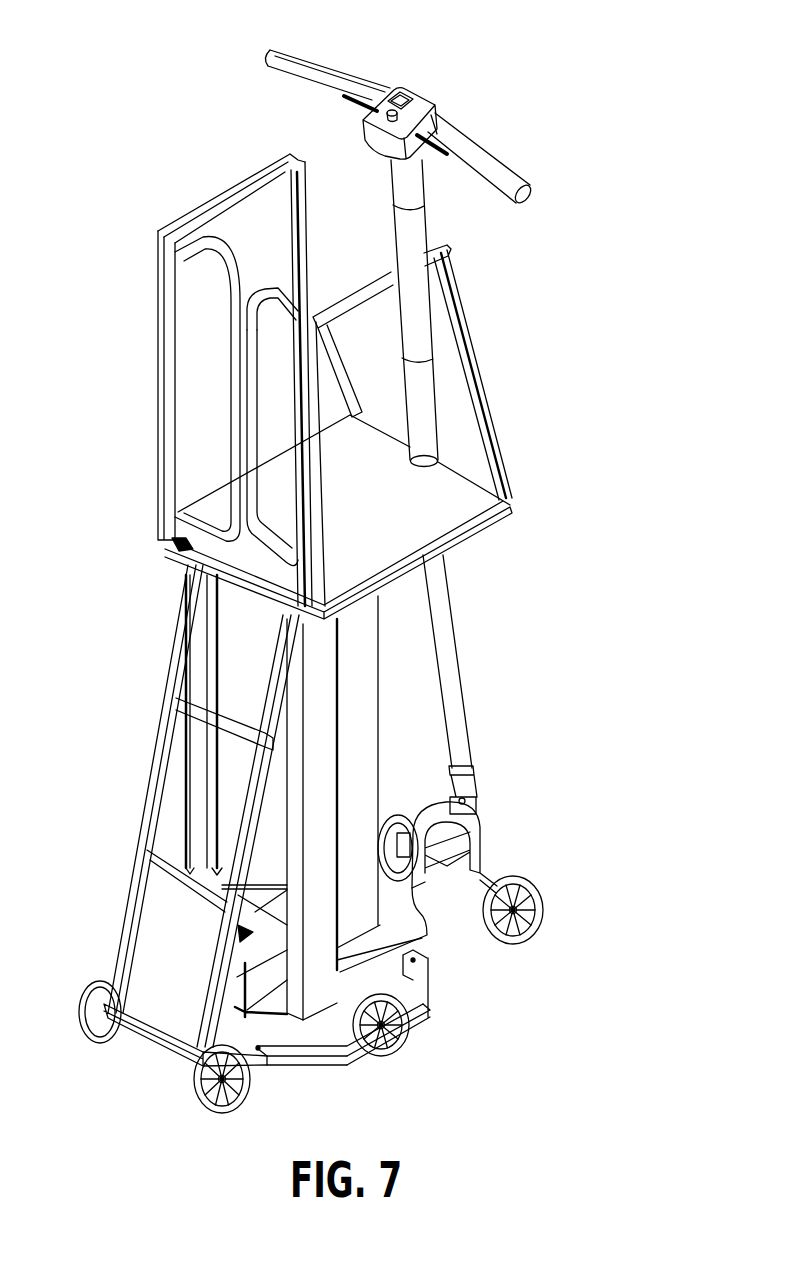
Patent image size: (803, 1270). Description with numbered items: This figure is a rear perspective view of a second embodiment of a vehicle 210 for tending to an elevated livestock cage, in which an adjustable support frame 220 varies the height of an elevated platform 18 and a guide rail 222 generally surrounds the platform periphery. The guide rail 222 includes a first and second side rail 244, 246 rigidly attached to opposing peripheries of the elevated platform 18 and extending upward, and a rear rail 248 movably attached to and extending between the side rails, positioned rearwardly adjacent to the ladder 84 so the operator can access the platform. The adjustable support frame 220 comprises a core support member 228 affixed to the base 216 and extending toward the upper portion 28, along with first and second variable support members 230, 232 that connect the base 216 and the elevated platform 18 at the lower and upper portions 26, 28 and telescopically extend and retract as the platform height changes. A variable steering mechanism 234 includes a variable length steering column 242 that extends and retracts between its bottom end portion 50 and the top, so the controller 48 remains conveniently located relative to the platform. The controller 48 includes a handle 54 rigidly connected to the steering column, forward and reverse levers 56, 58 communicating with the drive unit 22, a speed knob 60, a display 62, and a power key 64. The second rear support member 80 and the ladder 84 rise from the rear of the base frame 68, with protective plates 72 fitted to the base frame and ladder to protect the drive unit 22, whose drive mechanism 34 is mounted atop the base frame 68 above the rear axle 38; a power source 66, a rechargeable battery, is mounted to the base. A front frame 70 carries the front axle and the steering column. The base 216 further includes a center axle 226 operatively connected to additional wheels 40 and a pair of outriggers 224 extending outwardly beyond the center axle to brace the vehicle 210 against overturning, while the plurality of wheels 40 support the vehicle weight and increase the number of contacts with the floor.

The vehicle 210 is at (626, 138).
The controller 48 is at (445, 84).
The handle 54 is at (502, 150).
The forward lever 56 is at (450, 127).
The reverse lever 58 is at (357, 108).
The speed knob 60 is at (381, 146).
The display 62 is at (402, 95).
The power key 64 is at (389, 108).
The elevated platform 18 is at (387, 438).
The guide rail 222 is at (139, 220).
The first side rail 244 is at (250, 183).
The second side rail 246 is at (395, 267).
The rear rail 248 is at (268, 287).
The upper portion 28 is at (178, 561).
The variable steering mechanism 234 is at (493, 580).
The variable length steering column 242 is at (458, 632).
The bottom end portion 50 is at (479, 814).
The front frame 70 is at (481, 856).
The adjustable support frame 220 is at (93, 676).
The ladder 84 is at (144, 777).
The lower portion 26 is at (103, 970).
The second rear support member 80 is at (173, 652).
The first variable support member 230 is at (175, 812).
The rear axle 38 is at (175, 1046).
The drive unit 22 is at (254, 900).
The drive mechanism 34 is at (237, 1010).
The power source 66 is at (279, 973).
The second variable support member 232 is at (328, 688).
The core support member 228 is at (361, 741).
The protective plates 72 is at (418, 908).
The base 216 is at (430, 927).
The base frame 68 is at (421, 942).
The center axle 226 is at (356, 986).
The outriggers 224 is at (432, 1004).
The wheels 40 is at (403, 812).